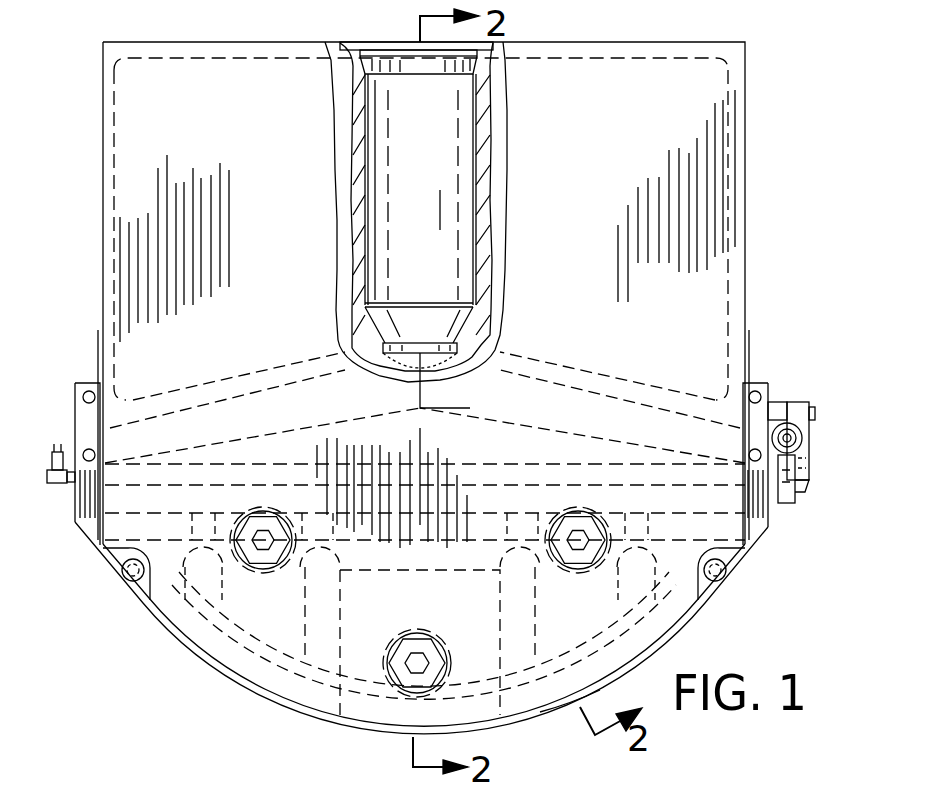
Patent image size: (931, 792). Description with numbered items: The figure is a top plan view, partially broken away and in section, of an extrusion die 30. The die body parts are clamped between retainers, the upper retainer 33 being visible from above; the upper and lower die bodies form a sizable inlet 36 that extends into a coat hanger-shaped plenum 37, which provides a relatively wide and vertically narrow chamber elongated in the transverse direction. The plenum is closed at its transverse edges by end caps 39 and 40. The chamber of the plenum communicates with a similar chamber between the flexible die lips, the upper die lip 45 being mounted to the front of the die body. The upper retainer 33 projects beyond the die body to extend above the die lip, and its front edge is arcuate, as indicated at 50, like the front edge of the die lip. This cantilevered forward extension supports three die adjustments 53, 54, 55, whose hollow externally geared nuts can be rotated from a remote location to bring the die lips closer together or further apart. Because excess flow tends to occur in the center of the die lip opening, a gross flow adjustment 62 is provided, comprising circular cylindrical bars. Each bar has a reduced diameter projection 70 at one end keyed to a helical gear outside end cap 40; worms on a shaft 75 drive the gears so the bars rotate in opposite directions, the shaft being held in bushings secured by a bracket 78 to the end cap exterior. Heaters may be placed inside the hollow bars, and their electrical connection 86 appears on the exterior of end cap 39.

The extrusion die 30 is at (752, 236).
The upper retainer 33 is at (270, 633).
The inlet 36 is at (372, 214).
The plenum 37 is at (640, 436).
The end cap 39 is at (78, 408).
The end cap 40 is at (766, 523).
The upper die lip 45 is at (553, 717).
The arcuate front edge 50 is at (400, 737).
The die adjustment 53 is at (250, 570).
The die adjustment 54 is at (388, 683).
The die adjustment 55 is at (590, 570).
The gross flow adjustment 62 is at (503, 458).
The reduced diameter projection 70 is at (792, 501).
The shaft 75 is at (794, 439).
The bracket 78 is at (810, 443).
The electrical connection 86 is at (44, 474).